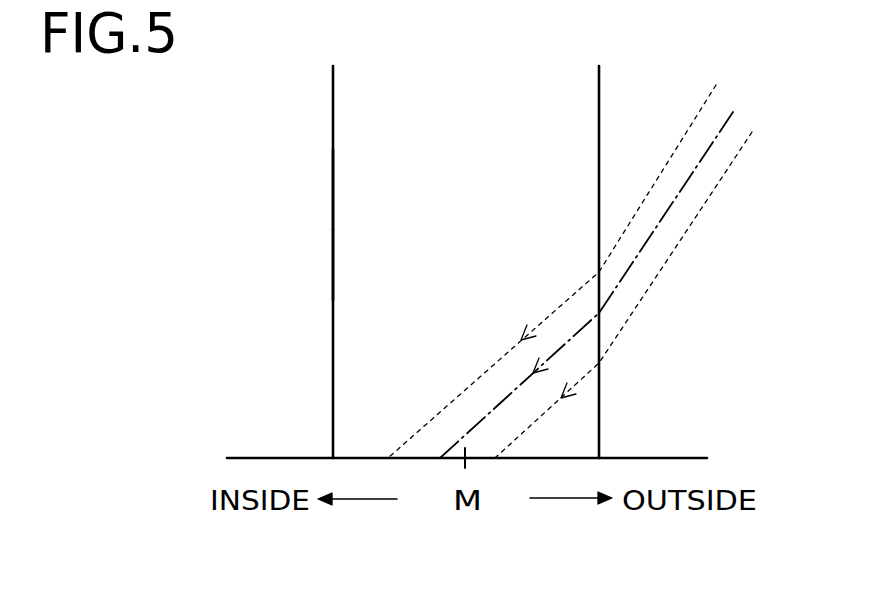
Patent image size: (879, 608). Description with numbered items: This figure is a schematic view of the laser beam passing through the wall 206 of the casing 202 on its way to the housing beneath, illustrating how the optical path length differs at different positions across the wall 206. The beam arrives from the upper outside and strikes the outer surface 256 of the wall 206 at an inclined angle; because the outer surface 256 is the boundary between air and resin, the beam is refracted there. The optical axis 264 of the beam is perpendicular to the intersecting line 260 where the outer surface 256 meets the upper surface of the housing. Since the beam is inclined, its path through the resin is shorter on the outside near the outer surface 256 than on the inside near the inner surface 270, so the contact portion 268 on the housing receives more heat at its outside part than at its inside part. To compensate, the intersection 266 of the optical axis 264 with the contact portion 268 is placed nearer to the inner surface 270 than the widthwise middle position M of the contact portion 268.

The casing 202 is at (332, 131).
The wall 206 is at (366, 179).
The inner surface 270 is at (332, 244).
The contact portion 268 is at (353, 458).
The outer surface 256 is at (600, 379).
The optical axis 264 is at (489, 413).
The intersecting line 260 is at (600, 457).
The intersection 266 is at (440, 459).